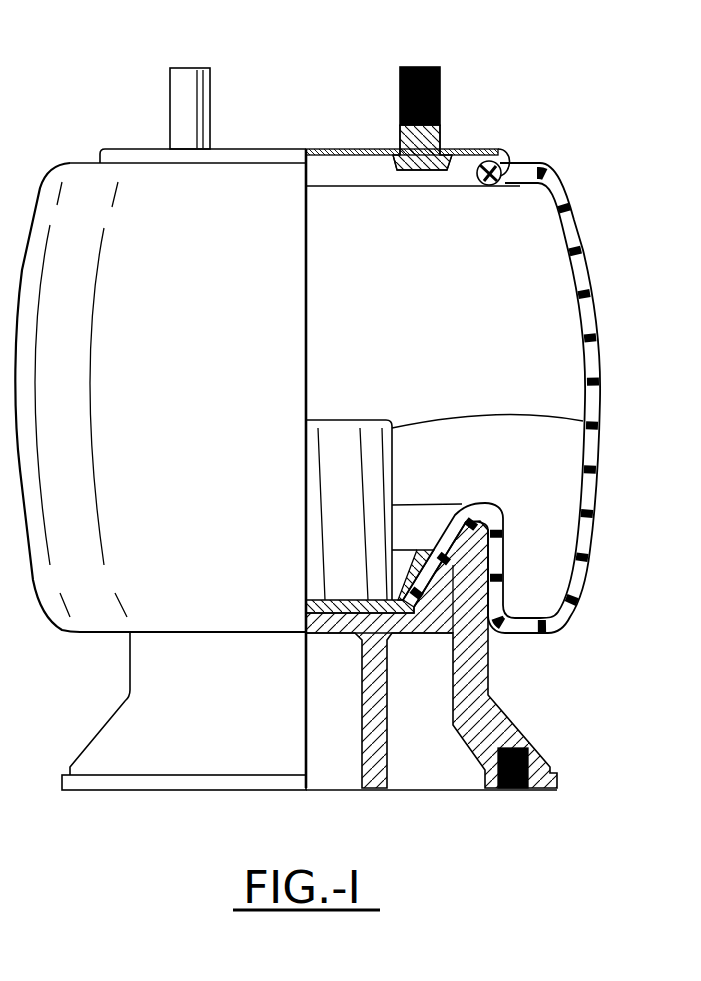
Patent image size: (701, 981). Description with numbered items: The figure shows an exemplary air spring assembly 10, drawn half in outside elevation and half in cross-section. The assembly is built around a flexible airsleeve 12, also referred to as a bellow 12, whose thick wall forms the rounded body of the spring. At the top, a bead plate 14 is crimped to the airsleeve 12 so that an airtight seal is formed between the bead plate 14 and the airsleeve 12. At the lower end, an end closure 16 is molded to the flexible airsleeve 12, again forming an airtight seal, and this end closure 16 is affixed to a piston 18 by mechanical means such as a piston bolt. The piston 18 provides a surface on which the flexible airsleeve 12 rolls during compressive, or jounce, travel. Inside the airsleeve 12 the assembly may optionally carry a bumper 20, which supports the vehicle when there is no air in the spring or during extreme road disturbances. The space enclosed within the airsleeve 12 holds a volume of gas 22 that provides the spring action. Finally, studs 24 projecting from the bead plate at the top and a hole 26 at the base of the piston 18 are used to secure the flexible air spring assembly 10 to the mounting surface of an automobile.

The air spring assembly 10 is at (612, 175).
The flexible airsleeve 12 is at (592, 298).
The bead plate 14 is at (514, 165).
The end closure 16 is at (407, 603).
The piston 18 is at (500, 718).
The bumper 20 is at (373, 432).
The volume of gas 22 is at (545, 372).
The studs 24 is at (193, 88).
The hole 26 is at (510, 790).